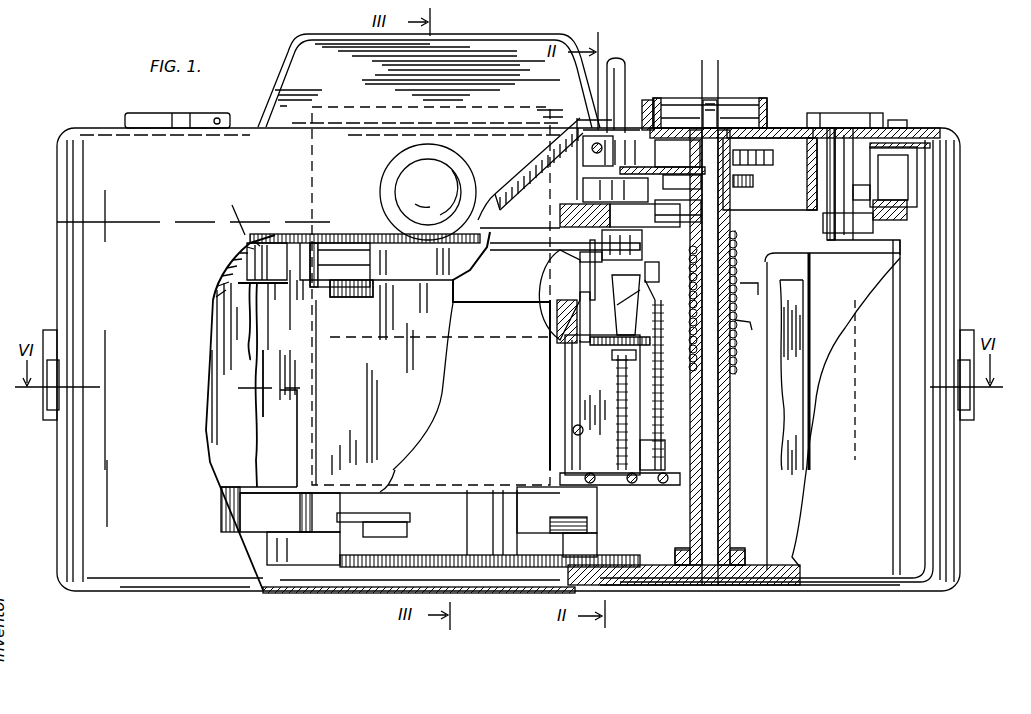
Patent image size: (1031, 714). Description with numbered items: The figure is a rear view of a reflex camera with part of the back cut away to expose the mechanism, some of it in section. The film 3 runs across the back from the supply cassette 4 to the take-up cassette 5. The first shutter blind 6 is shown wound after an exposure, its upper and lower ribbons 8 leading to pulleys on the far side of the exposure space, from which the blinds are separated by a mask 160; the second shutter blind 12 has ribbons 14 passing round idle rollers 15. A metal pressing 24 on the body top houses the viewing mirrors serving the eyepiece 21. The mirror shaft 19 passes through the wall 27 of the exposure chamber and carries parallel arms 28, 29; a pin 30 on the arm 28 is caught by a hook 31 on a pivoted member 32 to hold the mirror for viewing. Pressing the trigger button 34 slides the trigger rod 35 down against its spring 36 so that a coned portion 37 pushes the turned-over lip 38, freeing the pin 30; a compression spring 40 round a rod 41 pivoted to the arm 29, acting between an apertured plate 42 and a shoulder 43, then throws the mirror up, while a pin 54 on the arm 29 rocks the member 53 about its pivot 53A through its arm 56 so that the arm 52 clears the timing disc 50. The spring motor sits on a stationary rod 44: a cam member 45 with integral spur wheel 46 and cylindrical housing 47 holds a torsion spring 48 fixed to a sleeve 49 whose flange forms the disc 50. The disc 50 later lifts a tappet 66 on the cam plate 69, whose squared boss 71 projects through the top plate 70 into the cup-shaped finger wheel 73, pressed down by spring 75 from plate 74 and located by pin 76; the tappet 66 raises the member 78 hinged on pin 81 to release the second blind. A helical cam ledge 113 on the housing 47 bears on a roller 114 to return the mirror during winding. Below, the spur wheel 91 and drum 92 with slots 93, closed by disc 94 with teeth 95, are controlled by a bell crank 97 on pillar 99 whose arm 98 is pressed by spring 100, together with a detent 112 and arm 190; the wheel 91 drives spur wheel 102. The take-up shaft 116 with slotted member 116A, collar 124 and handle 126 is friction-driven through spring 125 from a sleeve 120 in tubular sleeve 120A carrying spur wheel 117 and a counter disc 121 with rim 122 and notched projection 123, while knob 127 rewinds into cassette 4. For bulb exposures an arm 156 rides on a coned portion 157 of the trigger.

The film 3 is at (240, 325).
The cassette 4 is at (230, 507).
The cassette 5 is at (900, 258).
The first shutter blind 6 is at (270, 234).
The ribbons 8 is at (374, 238).
The second shutter blind 12 is at (425, 409).
The ribbons 14 is at (263, 603).
The idle rollers 15 is at (285, 243).
The shaft 19 is at (560, 280).
The eyepiece 21 is at (438, 180).
The metal pressing 24 is at (482, 45).
The wall 27 is at (580, 165).
The arm 28 is at (582, 246).
The arm 29 is at (615, 306).
The pin 30 is at (580, 257).
The hook 31 is at (580, 300).
The member 32 is at (592, 405).
The trigger button 34 is at (626, 78).
The trigger rod 35 is at (620, 345).
The spring 36 is at (620, 407).
The coned portion 37 is at (570, 338).
The turned-over lip 38 is at (663, 375).
The compression spring 40 is at (660, 448).
The rod 41 is at (660, 420).
The apertured plate 42 is at (680, 475).
The shoulder 43 is at (662, 305).
The stationary vertical rod 44 is at (712, 525).
The cam member 45 is at (740, 393).
The spur wheel 46 is at (740, 555).
The cylindrical housing 47 is at (740, 283).
The coiled torsion spring 48 is at (740, 327).
The sleeve 49 is at (832, 265).
The disc 50 is at (770, 174).
The arm 52 is at (655, 182).
The member 53 is at (678, 219).
The pivot 53A is at (678, 210).
The pin 54 is at (664, 275).
The arm 56 is at (610, 238).
The tappet 66 is at (753, 183).
The cam plate 69 is at (773, 165).
The top plate 70 is at (777, 127).
The squared end 71 is at (752, 97).
The cup-shaped finger wheel 73 is at (646, 100).
The circular plate 74 is at (718, 118).
The coiled compression spring 75 is at (766, 112).
The pin 76 is at (681, 120).
The flat horizontal member 78 is at (662, 157).
The pin 81 is at (578, 152).
The spur wheel 91 is at (385, 580).
The hollow drum 92 is at (500, 560).
The slots 93 is at (407, 530).
The disc 94 is at (440, 545).
The radial teeth 95 is at (400, 470).
The bell crank 97 is at (528, 475).
The arm 98 is at (575, 490).
The pillar 99 is at (598, 537).
The spring 100 is at (557, 510).
The spur wheel 102 is at (652, 590).
The spring-loaded detent 112 is at (405, 504).
The helical cam ledge 113 is at (745, 300).
The roller 114 is at (730, 308).
The shaft 116 is at (870, 165).
The slotted member 116A is at (862, 240).
The spur wheel 117 is at (907, 208).
The sleeve 120 is at (847, 162).
The tubular sleeve 120A is at (870, 176).
The disc 121 is at (905, 128).
The rim 122 is at (925, 130).
The notched projection 123 is at (898, 120).
The collar 124 is at (858, 120).
The spring 125 is at (835, 222).
The winding handle 126 is at (772, 130).
The knob and winding handle 127 is at (185, 124).
The arm 156 is at (597, 191).
The coned portion 157 is at (560, 216).
The mask 160 is at (470, 475).
The arm 190 is at (528, 560).